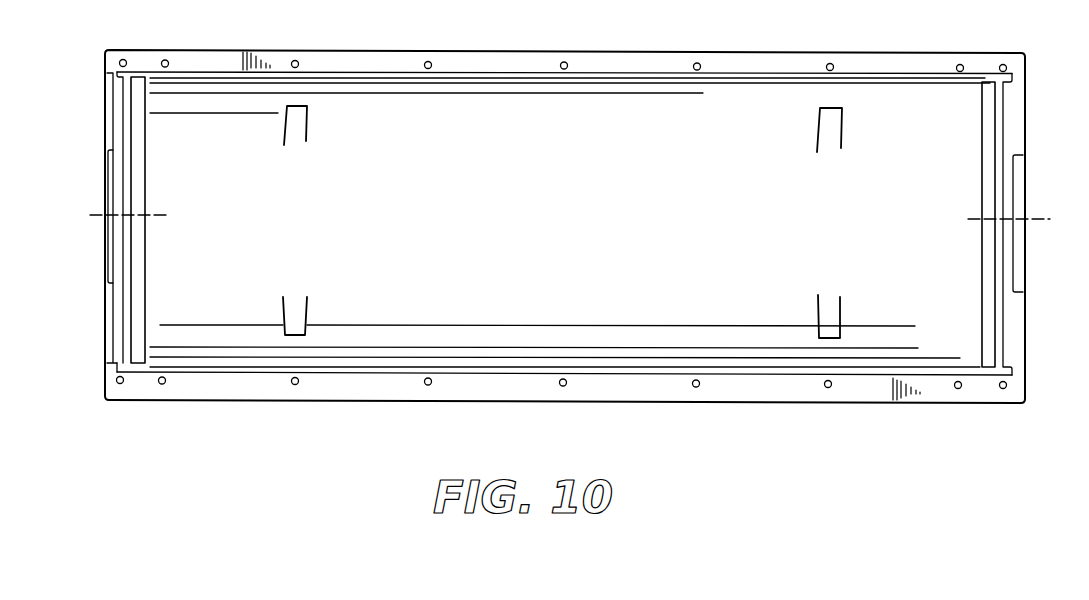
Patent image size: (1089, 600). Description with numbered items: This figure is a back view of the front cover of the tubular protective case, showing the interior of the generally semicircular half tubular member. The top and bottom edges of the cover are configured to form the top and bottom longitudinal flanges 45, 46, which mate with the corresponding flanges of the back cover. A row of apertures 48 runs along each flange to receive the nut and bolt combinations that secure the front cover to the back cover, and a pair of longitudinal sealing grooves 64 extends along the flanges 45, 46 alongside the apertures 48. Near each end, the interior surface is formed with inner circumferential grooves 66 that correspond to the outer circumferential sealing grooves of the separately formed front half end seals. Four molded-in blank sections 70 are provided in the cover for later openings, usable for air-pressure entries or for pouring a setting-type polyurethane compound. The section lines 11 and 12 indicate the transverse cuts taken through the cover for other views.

The section line 11- 11 is at (88, 186).
The section line 12- 12 is at (820, 30).
The top longitudinal flange 45 is at (642, 63).
The bottom longitudinal flange 46 is at (660, 389).
The apertures 48 is at (431, 63).
The longitudinal sealing grooves 64 is at (357, 72).
The inner circumferential grooves 66 is at (130, 298).
The molded-in blank sections 70 is at (832, 123).